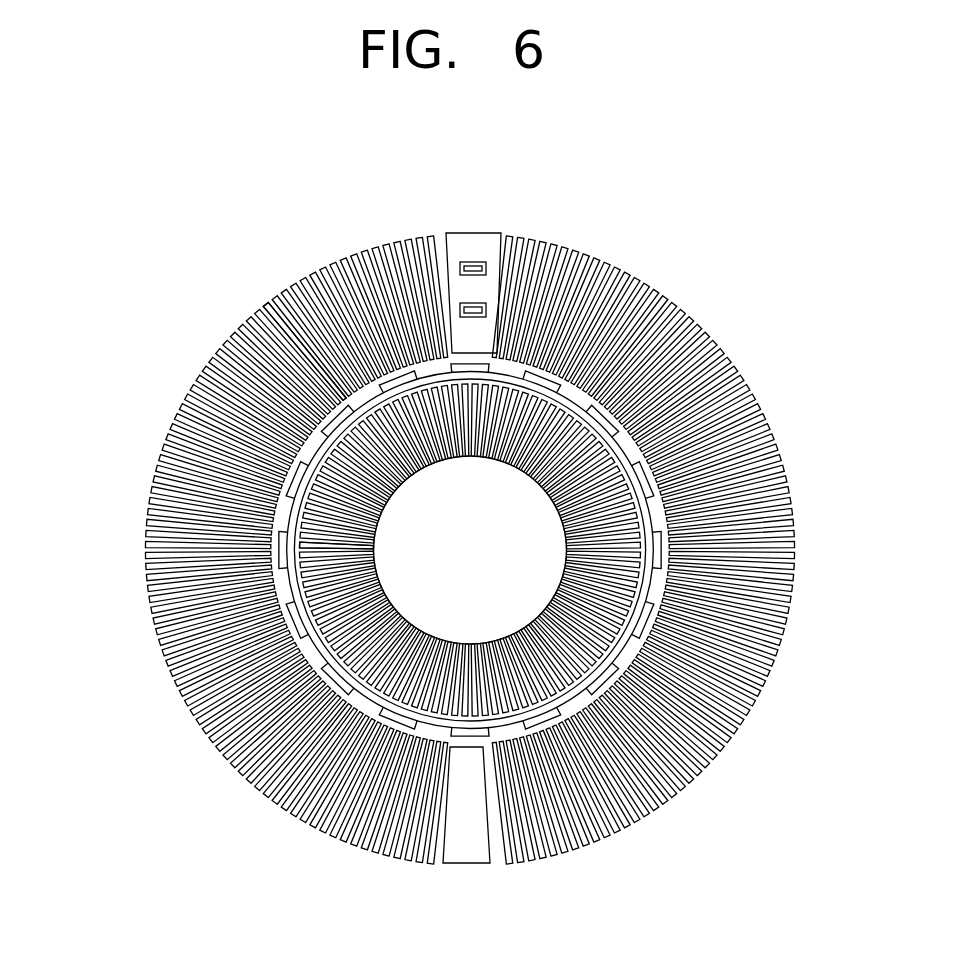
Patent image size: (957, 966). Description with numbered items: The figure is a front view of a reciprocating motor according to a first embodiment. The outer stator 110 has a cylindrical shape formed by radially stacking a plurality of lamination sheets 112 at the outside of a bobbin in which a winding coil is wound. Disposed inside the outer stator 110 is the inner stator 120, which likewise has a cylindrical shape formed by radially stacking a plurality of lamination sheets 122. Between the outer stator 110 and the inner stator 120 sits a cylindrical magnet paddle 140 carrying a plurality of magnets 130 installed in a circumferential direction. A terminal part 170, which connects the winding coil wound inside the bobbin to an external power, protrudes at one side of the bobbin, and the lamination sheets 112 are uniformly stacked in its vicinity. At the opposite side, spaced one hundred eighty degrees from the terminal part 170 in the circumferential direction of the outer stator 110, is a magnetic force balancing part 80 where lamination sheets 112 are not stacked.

The outer stator 110 is at (306, 255).
The lamination sheet 112 is at (268, 303).
The inner stator 120 is at (290, 521).
The lamination sheet 122 is at (303, 561).
The magnet 130 is at (655, 553).
The magnet paddle 140 is at (657, 514).
The terminal part 170 is at (489, 250).
The magnetic force balancing part 80 is at (476, 843).